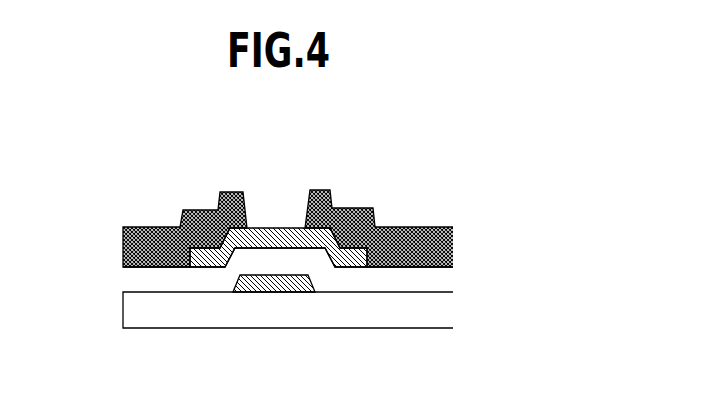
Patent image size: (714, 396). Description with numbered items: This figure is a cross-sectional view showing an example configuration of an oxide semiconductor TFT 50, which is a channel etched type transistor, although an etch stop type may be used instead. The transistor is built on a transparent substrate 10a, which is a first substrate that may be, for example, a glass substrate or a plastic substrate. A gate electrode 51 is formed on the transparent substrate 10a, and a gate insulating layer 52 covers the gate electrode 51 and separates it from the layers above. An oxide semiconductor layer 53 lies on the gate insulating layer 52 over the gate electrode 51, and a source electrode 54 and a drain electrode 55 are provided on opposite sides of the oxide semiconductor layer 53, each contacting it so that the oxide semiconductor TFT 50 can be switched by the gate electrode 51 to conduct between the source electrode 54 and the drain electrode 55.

The oxide semiconductor TFT 50 is at (246, 231).
The transparent substrate 10a is at (137, 315).
The gate electrode 51 is at (275, 293).
The gate insulating layer 52 is at (137, 277).
The oxide semiconductor layer 53 is at (273, 229).
The source electrode 54 is at (192, 209).
The drain electrode 55 is at (365, 211).